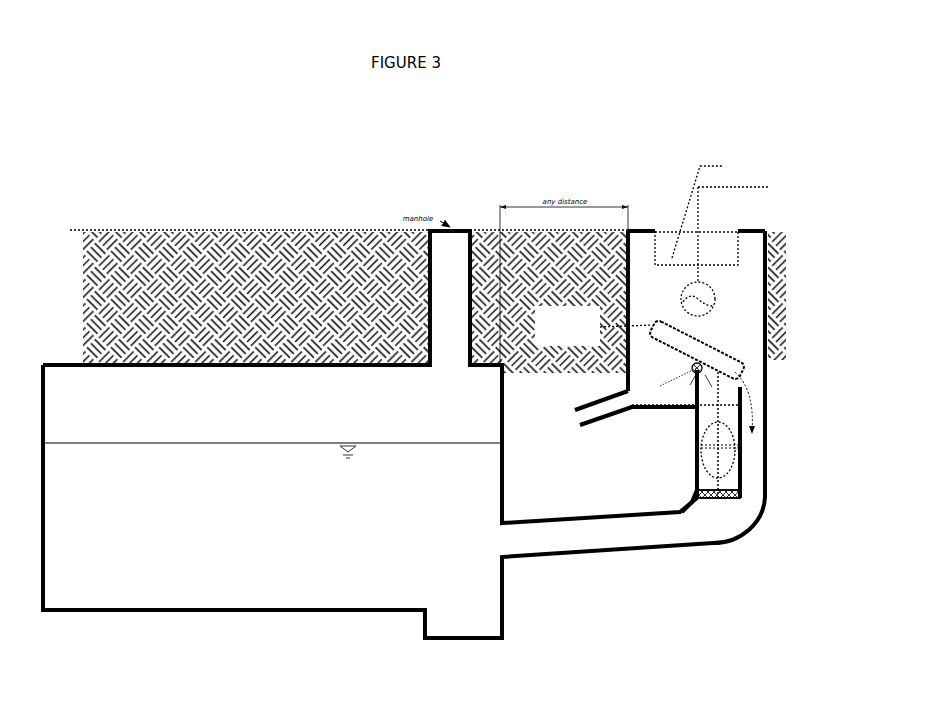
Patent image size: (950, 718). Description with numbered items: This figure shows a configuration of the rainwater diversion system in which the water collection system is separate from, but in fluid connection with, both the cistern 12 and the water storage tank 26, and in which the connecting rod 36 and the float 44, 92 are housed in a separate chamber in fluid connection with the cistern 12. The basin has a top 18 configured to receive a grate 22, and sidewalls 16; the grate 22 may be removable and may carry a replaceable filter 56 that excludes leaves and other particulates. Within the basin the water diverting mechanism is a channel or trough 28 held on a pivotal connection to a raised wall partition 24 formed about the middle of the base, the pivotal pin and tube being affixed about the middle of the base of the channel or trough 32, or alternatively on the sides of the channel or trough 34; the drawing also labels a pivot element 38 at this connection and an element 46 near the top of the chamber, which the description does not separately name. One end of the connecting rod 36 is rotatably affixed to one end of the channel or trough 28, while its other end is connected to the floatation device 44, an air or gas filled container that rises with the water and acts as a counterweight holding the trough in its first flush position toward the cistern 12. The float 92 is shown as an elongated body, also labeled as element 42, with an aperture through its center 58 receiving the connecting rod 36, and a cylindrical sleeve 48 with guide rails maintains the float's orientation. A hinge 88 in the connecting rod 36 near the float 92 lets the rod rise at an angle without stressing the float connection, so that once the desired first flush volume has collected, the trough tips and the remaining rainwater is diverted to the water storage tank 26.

The cistern 12 is at (404, 434).
The sidewalls 16 is at (778, 269).
The top 18 is at (768, 230).
The grate 22 is at (708, 231).
The raised wall partition 24 is at (690, 399).
The water storage tank 26 is at (572, 412).
The channel or trough 28 is at (805, 352).
The base of the channel or trough 32 is at (702, 346).
The sides of the channel or trough 34 is at (720, 341).
The connecting rod 36 is at (710, 408).
The hinge 38 is at (725, 375).
The float 42 is at (726, 459).
The floatation device 44 is at (736, 474).
The float rod 46 is at (736, 248).
The cylindrical sleeve 48 is at (748, 463).
The filter 56 is at (648, 484).
The aperture through the float center 58 is at (712, 456).
The hinge 88 is at (728, 388).
The float 92 is at (718, 494).